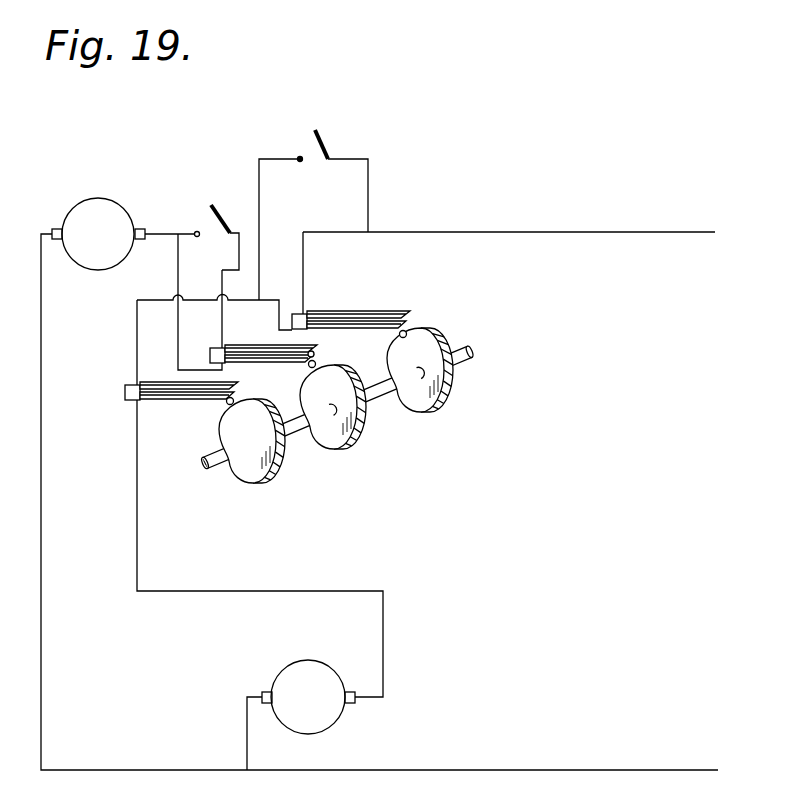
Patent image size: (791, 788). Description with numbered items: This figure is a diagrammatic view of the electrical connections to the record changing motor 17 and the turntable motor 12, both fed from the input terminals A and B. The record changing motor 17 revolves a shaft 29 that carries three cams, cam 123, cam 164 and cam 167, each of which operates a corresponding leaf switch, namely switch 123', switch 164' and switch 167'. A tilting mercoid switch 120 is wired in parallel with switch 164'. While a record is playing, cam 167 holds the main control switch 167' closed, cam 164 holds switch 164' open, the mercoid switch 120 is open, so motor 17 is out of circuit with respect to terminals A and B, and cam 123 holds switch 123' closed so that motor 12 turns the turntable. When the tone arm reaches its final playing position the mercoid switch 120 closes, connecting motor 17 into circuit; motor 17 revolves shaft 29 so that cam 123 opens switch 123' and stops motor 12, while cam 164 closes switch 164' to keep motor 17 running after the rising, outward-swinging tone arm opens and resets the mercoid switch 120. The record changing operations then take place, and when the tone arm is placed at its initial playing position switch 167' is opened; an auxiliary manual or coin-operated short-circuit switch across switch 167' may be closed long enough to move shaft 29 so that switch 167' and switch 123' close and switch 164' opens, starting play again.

The motor 17 is at (102, 213).
The motor 12 is at (315, 723).
The mercoid switch 120 is at (217, 207).
The switch 167' is at (351, 308).
The switch 164' is at (263, 368).
The switch 123' is at (181, 405).
The cam 123 is at (279, 476).
The cam 164 is at (374, 434).
The cam 167 is at (461, 397).
The shaft 29 is at (222, 475).
The input terminal A is at (518, 230).
The input terminal B is at (390, 508).